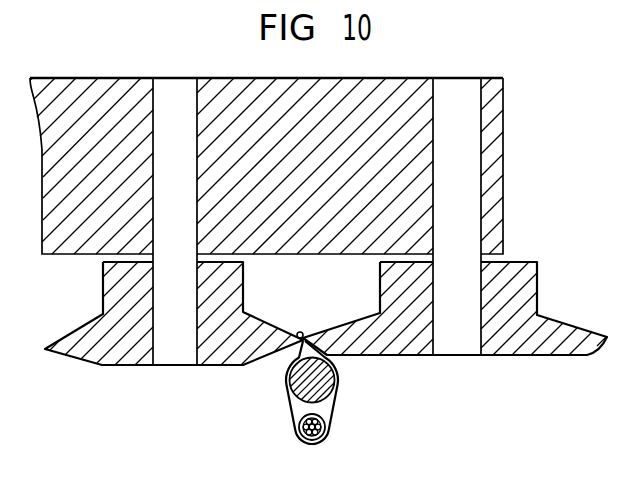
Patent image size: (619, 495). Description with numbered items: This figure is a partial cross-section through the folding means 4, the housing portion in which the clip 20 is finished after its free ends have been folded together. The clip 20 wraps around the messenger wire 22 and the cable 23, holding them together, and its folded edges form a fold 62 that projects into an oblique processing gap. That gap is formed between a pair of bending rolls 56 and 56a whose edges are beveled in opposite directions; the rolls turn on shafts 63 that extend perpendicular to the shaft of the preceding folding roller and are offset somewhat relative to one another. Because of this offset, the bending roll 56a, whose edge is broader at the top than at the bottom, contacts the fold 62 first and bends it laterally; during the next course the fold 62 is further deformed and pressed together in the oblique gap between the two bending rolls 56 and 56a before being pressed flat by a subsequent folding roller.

The folding means 4 is at (507, 148).
The shafts 63 is at (173, 97).
The bending roll 56 is at (213, 358).
The bending roll 56a is at (512, 348).
The fold 62 is at (300, 331).
The clip 20 is at (335, 408).
The messenger wire 22 is at (322, 383).
The cable 23 is at (298, 433).